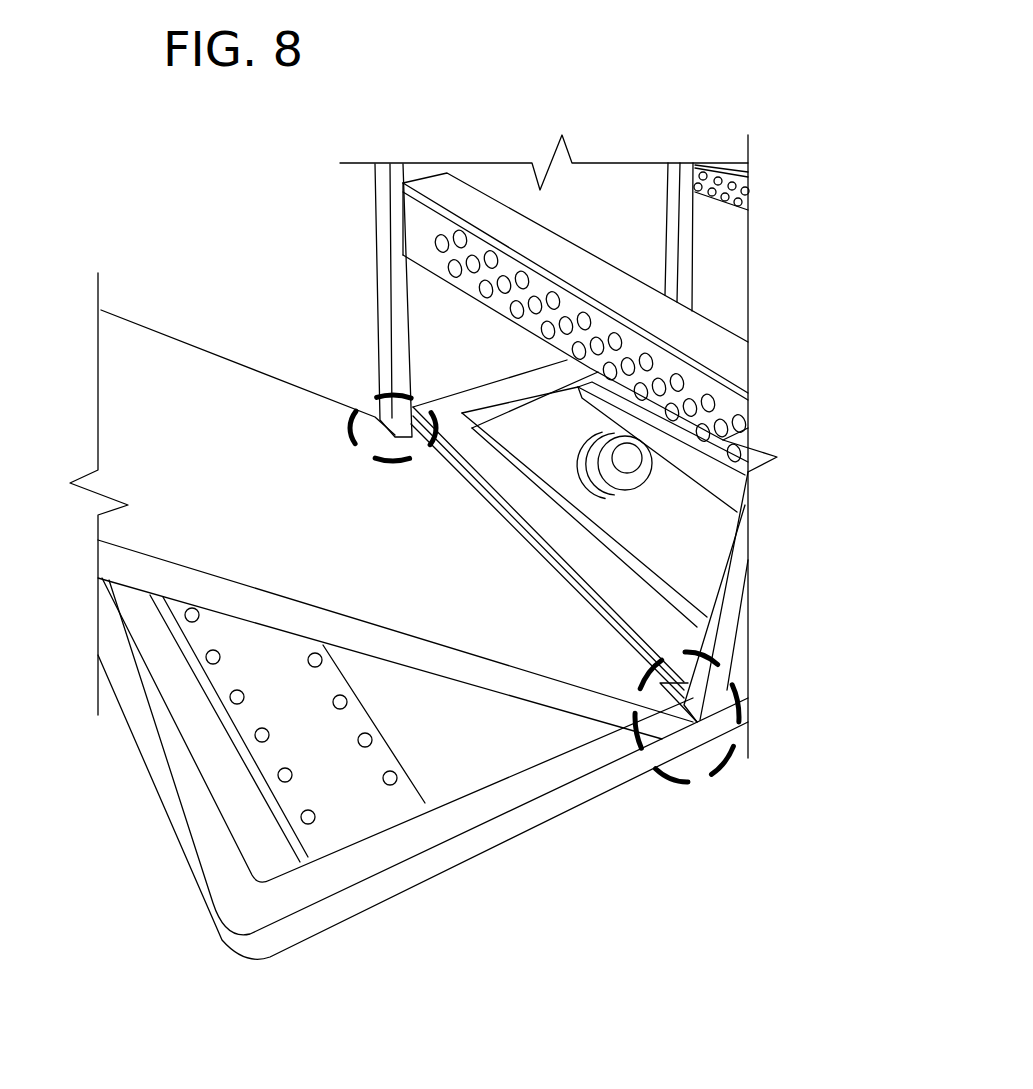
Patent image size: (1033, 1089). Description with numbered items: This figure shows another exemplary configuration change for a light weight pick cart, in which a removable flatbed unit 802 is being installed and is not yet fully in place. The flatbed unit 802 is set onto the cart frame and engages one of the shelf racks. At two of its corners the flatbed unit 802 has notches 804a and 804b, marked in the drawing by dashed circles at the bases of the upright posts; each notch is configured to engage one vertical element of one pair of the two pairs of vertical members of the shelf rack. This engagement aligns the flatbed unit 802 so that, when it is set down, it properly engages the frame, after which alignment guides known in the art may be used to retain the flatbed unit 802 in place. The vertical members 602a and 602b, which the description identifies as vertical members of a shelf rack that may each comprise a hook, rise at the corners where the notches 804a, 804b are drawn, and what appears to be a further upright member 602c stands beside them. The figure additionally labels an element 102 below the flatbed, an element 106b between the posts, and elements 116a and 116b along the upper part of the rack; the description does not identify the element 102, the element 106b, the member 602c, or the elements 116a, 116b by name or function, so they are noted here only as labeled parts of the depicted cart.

The floor panel 102 is at (192, 843).
The cylindrical mount 106b is at (610, 490).
The perforated rail 116a is at (733, 193).
The perforated rail 116b is at (722, 357).
The vertical member 602a is at (733, 547).
The vertical member 602b is at (382, 245).
The post 602c is at (675, 187).
The removable flatbed unit 802 is at (126, 412).
The notch 804a is at (689, 772).
The notch 804b is at (372, 397).